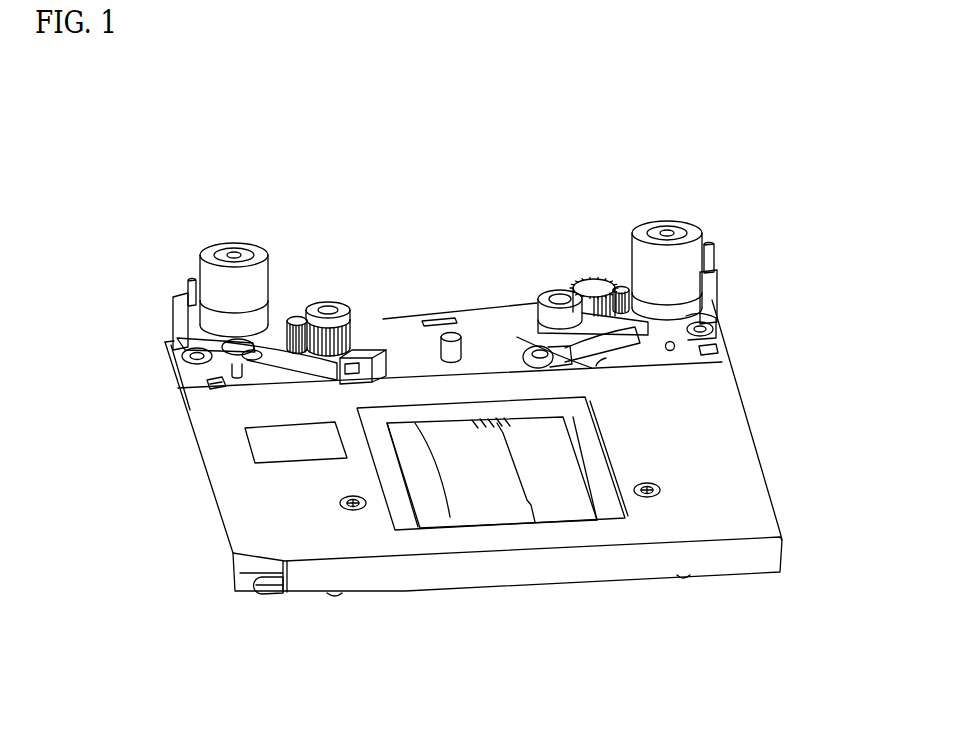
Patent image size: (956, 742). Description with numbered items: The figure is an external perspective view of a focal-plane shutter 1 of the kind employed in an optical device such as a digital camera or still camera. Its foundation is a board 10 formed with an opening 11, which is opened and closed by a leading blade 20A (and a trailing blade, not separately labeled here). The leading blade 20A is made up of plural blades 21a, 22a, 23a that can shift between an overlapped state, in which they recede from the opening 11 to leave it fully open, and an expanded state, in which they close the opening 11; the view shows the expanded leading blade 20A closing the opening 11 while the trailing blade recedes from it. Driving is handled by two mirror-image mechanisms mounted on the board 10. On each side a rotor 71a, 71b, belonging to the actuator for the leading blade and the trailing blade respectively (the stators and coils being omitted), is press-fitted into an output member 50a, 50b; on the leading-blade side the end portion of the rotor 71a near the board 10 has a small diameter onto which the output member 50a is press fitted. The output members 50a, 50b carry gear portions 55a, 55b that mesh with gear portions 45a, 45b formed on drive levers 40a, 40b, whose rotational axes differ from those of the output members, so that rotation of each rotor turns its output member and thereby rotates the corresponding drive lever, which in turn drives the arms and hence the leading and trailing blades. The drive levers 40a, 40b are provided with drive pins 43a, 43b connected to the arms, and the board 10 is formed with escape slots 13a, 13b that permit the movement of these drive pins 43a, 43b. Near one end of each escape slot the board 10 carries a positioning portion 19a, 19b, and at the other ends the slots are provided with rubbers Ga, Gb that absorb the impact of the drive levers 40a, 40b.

The focal-plane shutter 1 is at (519, 182).
The board 10 is at (372, 593).
The opening 11 is at (410, 503).
The leading blade 20A is at (620, 650).
The blade 21a is at (573, 495).
The blade 22a is at (470, 497).
The blade 23a is at (427, 495).
The escape slot 13a is at (207, 382).
The escape slot 13b is at (596, 366).
The positioning portion 19a is at (382, 360).
The positioning portion 19b is at (702, 313).
The drive lever 40a is at (347, 292).
The drive lever 40b is at (548, 295).
The drive pin 43a is at (335, 382).
The drive pin 43b is at (718, 351).
The gear portion 45a is at (332, 316).
The gear portion 45b is at (591, 284).
The output member 50a is at (275, 262).
The output member 50b is at (632, 298).
The gear portion 55a is at (284, 314).
The gear portion 55b is at (617, 292).
The rotor 71a is at (199, 264).
The rotor 71b is at (703, 245).
The rubber Ga is at (186, 352).
The rubber Gb is at (526, 344).